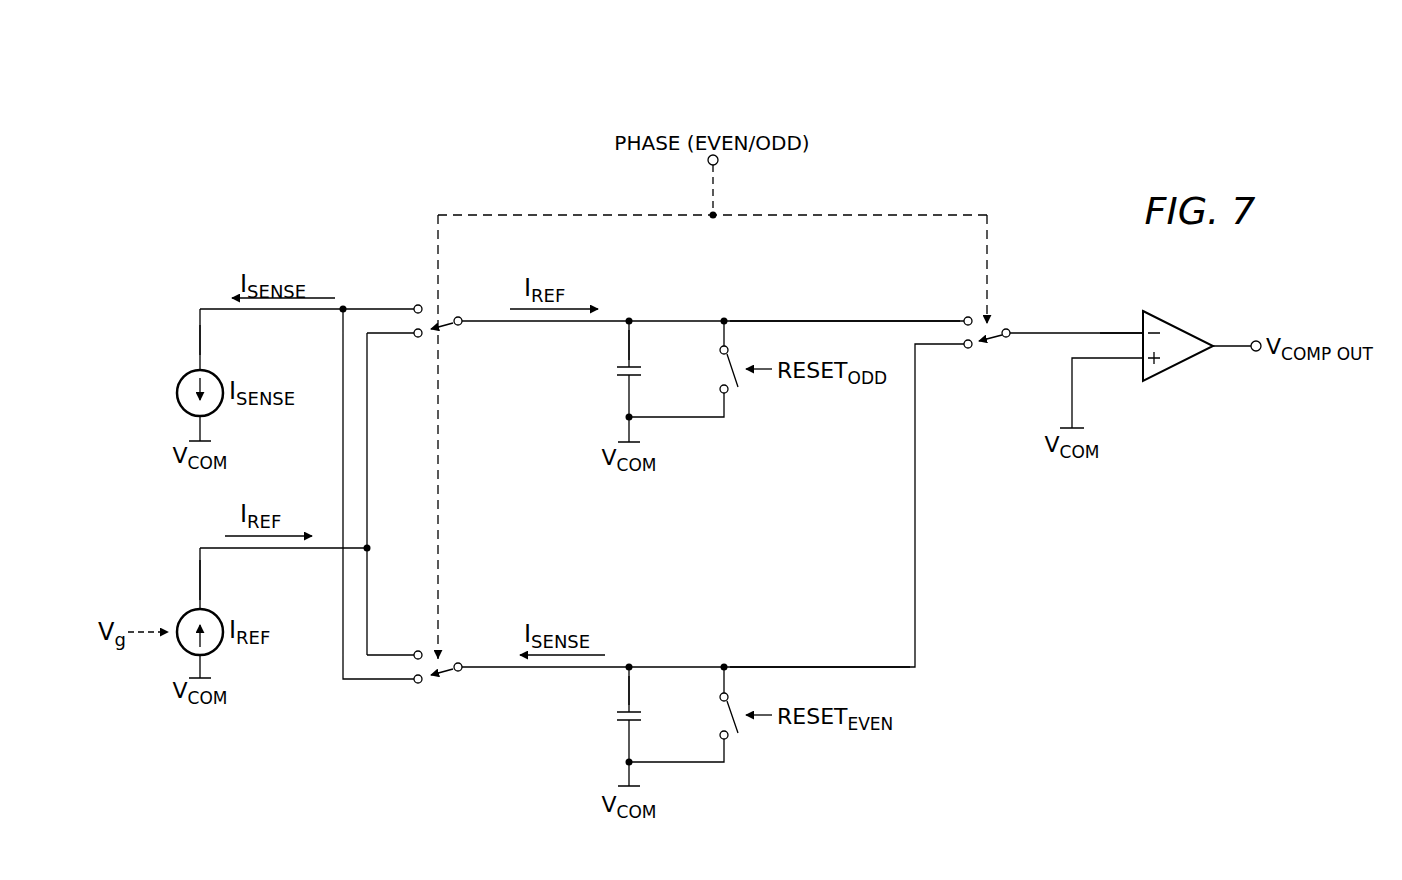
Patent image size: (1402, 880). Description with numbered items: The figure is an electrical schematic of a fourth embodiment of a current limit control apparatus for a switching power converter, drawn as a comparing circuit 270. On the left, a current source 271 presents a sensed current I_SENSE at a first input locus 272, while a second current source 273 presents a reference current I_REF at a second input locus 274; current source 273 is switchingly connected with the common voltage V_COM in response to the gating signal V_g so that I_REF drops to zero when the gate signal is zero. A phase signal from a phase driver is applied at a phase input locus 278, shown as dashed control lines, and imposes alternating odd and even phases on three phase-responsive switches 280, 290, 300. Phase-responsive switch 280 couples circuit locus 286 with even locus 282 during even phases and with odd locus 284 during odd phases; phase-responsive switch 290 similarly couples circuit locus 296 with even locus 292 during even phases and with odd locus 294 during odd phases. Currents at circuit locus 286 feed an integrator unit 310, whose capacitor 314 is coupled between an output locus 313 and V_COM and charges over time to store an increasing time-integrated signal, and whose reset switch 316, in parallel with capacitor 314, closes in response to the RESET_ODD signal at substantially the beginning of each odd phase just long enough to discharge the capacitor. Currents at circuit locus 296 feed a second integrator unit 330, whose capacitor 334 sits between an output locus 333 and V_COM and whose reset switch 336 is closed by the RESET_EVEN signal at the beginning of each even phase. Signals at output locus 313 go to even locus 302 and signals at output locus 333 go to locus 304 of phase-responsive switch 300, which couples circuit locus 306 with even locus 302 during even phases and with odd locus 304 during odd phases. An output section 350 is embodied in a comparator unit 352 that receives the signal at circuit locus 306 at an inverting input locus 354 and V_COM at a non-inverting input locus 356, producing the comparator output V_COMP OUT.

The comparing circuit 270 is at (498, 162).
The current source 271 is at (178, 393).
The first input locus 272 is at (200, 343).
The current source 273 is at (217, 612).
The second input locus 274 is at (200, 579).
The phase input locus 278 is at (718, 163).
The phase-responsive switch 280 is at (447, 332).
The even locus 282 is at (416, 305).
The odd locus 284 is at (416, 338).
The circuit locus 286 is at (460, 318).
The phase-responsive switch 290 is at (447, 678).
The even locus 292 is at (416, 651).
The odd locus 294 is at (416, 684).
The circuit locus 296 is at (460, 663).
The phase-responsive switch 300 is at (996, 340).
The even locus 302 is at (965, 317).
The odd locus 304 is at (965, 349).
The circuit locus 306 is at (1009, 329).
The integrator unit 310 is at (659, 296).
The output locus 313 is at (820, 321).
The capacitor 314 is at (617, 368).
The reset switch 316 is at (722, 366).
The integrator unit 330 is at (689, 787).
The output locus 333 is at (820, 667).
The capacitor 334 is at (617, 714).
The reset switch 336 is at (722, 712).
The output section 350 is at (1160, 358).
The comparator unit 352 is at (1178, 328).
The inverting input locus 354 is at (1138, 333).
The non-inverting input locus 356 is at (1138, 360).